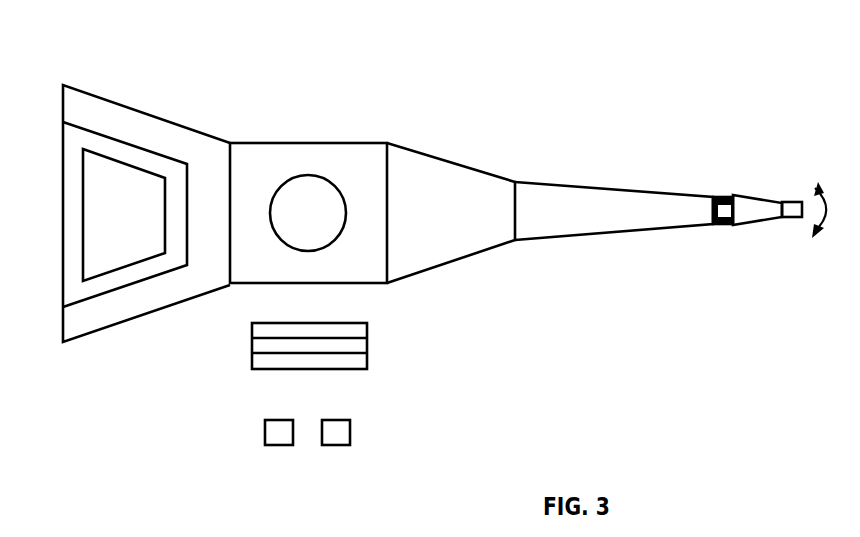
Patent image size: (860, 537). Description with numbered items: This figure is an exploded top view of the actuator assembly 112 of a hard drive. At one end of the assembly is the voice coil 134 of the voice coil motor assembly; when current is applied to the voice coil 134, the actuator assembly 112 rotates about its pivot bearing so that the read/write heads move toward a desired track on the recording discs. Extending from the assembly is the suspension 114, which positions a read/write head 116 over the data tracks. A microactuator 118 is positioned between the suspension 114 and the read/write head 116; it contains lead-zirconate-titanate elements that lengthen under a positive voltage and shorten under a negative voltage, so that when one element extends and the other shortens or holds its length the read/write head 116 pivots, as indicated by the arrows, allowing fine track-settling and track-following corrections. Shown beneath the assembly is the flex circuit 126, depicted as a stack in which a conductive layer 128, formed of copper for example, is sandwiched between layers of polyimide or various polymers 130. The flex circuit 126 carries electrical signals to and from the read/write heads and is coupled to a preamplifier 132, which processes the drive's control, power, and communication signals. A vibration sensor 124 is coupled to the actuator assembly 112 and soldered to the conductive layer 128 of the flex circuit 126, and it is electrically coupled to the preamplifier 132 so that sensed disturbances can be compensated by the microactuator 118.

The actuator assembly 112 is at (176, 42).
The suspension 114 is at (643, 192).
The read/write head 116 is at (797, 201).
The microactuator 118 is at (723, 196).
The vibration sensor 124 is at (266, 433).
The flex circuit 126 is at (245, 323).
The conductive layer 128 is at (355, 348).
The layers of polyimide or various polymers 130 is at (358, 328).
The preamplifier 132 is at (349, 433).
The voice coil 134 is at (72, 259).